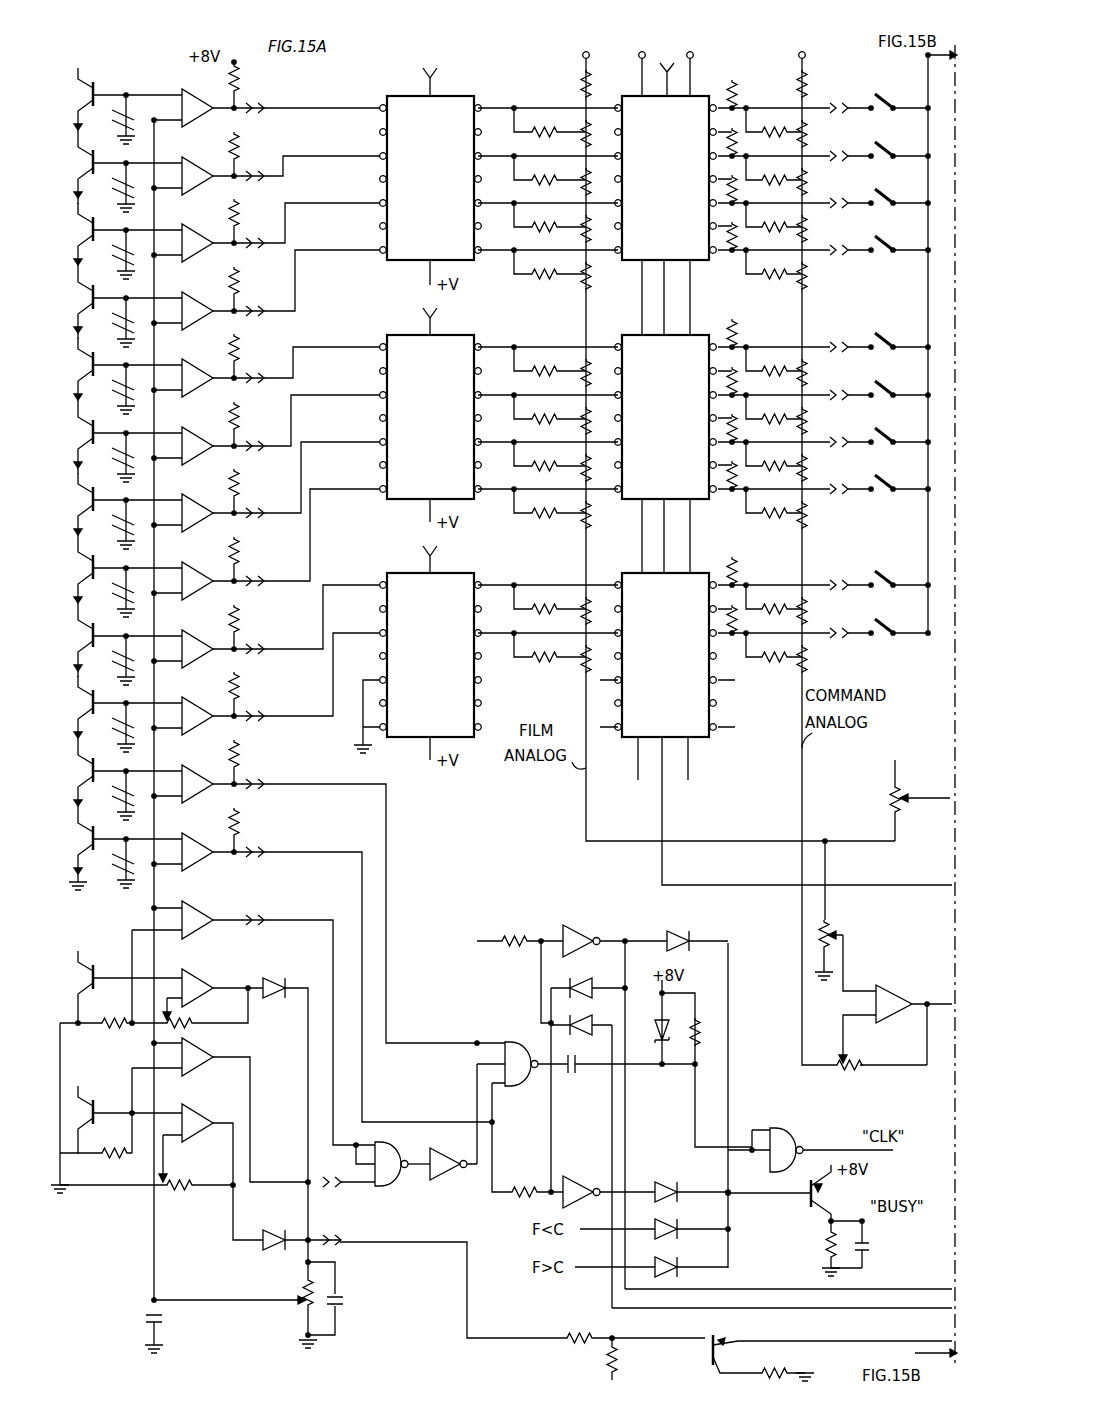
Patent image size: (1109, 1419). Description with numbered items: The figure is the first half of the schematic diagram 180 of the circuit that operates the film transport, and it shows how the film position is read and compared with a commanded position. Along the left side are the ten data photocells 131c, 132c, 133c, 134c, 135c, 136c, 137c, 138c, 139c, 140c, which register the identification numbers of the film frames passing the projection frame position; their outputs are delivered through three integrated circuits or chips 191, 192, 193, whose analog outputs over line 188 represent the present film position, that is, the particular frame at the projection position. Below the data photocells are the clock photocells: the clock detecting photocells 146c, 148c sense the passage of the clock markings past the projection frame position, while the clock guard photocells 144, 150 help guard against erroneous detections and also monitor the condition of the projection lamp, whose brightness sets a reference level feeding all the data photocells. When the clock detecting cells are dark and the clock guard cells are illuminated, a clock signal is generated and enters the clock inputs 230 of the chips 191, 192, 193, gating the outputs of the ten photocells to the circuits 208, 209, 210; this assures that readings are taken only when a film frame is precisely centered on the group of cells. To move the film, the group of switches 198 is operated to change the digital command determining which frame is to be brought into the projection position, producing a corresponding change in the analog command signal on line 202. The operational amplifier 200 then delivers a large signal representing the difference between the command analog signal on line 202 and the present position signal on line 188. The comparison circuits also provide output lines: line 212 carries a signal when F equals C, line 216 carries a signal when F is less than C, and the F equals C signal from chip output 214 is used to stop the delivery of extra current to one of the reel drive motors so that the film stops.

The photocell 131c is at (71, 102).
The photocell 132c is at (71, 170).
The photocell 133c is at (71, 237).
The photocell 134c is at (71, 305).
The photocell 135c is at (71, 372).
The photocell 136c is at (71, 440).
The photocell 137c is at (71, 507).
The photocell 138c is at (71, 575).
The photocell 139c is at (71, 643).
The photocell 140c is at (71, 710).
The clock detecting photocell 146c is at (71, 778).
The clock detecting photocell 148c is at (71, 846).
The clock guard photocell 144 is at (70, 987).
The clock guard photocell 150 is at (85, 1098).
The schematic diagram 180 is at (557, 463).
The line 188 is at (586, 827).
The integrated circuit 191 is at (458, 99).
The integrated circuit 192 is at (458, 343).
The integrated circuit 193 is at (458, 580).
The switches 198 is at (886, 96).
The operational amplifier 200 is at (891, 990).
The line 202 is at (802, 796).
The circuit 208 is at (700, 96).
The circuit 209 is at (633, 343).
The circuit 210 is at (633, 580).
The line 212 is at (628, 768).
The chip output 214 is at (660, 826).
The line 216 is at (692, 768).
The clock inputs 230 is at (420, 80).